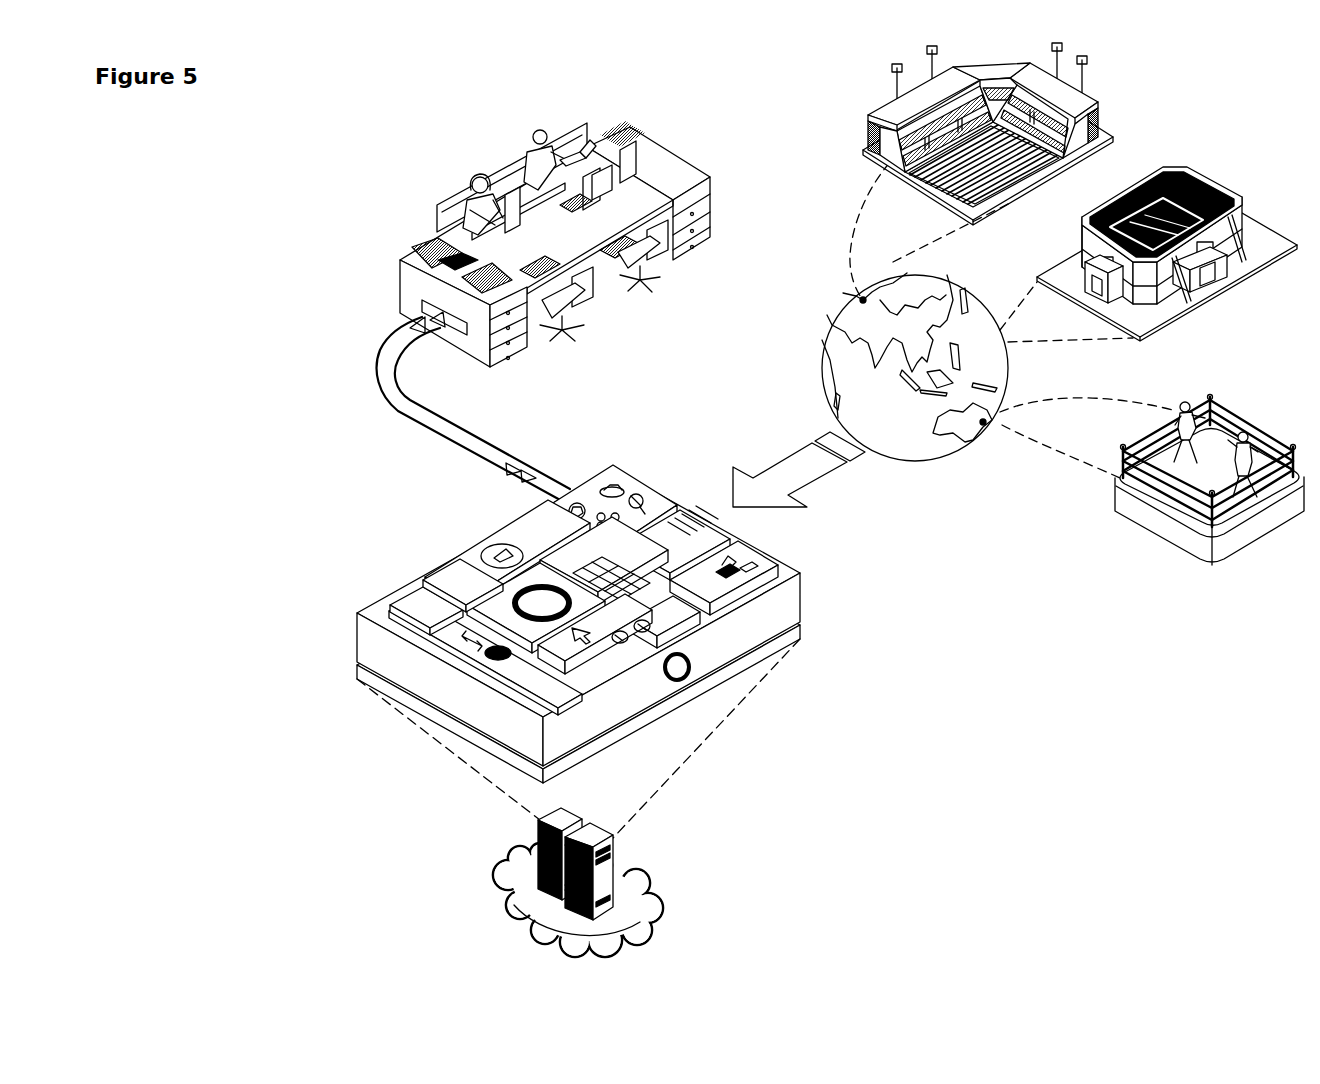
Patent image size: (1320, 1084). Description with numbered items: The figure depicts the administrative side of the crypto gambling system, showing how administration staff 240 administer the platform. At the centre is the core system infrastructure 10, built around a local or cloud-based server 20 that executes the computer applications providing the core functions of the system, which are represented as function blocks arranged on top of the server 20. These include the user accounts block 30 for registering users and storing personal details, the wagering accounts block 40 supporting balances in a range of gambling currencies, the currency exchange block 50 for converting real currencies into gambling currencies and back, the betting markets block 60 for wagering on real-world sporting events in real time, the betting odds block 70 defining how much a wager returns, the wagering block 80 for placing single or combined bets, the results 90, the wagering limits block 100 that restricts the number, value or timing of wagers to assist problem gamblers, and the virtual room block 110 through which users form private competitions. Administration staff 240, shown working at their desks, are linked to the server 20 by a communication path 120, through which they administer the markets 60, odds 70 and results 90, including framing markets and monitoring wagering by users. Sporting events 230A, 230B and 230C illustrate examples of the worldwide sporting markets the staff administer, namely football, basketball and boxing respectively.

The core system infrastructure 10 is at (567, 763).
The server 20 is at (630, 707).
The user accounts function block 30 is at (500, 543).
The wagering accounts function block 40 is at (505, 600).
The currency exchange function block 50 is at (412, 607).
The betting markets function block 60 is at (610, 480).
The betting odds function block 70 is at (673, 520).
The wagering function block 80 is at (590, 550).
The results 90 is at (763, 562).
The wagering limits function block 100 is at (560, 647).
The virtual room function block 110 is at (660, 615).
The communication 120 is at (438, 423).
The sporting event (football) 230A is at (872, 113).
The sporting event (basketball) 230B is at (1183, 167).
The sporting event (boxing) 230C is at (1215, 440).
The administration staff 240 is at (528, 155).